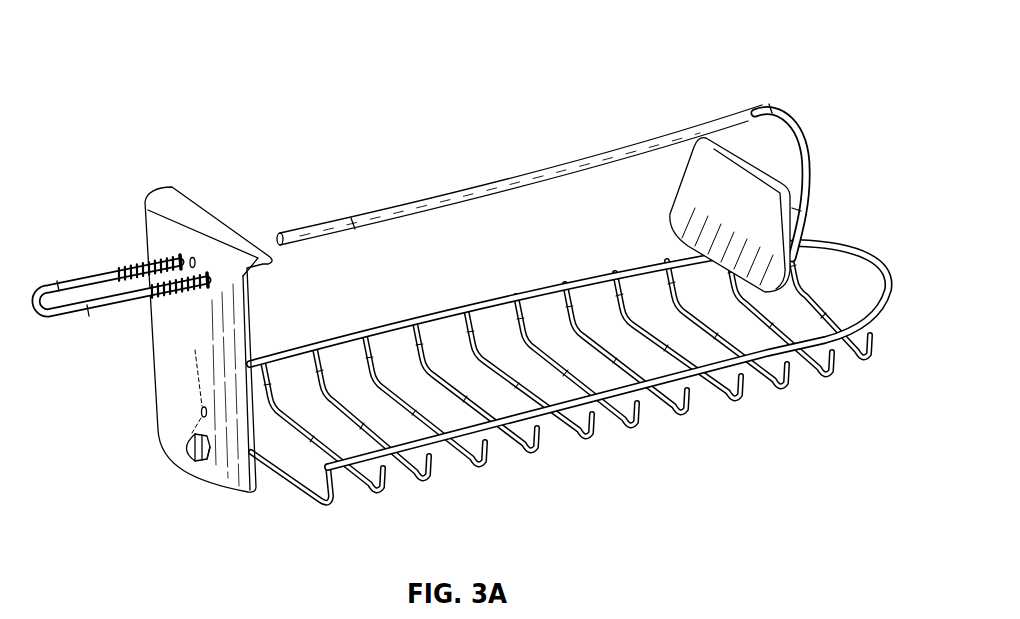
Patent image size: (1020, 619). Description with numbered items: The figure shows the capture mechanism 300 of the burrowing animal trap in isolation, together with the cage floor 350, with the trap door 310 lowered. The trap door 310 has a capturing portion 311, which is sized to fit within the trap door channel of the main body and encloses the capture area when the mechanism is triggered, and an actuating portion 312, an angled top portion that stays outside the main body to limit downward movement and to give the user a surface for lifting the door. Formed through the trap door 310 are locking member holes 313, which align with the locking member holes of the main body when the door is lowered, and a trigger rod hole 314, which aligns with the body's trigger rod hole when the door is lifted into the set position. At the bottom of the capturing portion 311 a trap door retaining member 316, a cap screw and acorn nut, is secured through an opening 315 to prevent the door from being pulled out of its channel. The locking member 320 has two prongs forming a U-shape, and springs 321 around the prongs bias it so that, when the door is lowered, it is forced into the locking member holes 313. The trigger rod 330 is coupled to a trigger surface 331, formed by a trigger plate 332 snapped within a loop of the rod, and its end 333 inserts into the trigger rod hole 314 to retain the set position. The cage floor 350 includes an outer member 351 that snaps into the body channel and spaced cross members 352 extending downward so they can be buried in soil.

The capture mechanism 300 is at (147, 46).
The trap door 310 is at (176, 316).
The capturing portion 311 is at (168, 350).
The actuating portion 312 is at (172, 188).
The locking member holes 313 is at (208, 275).
The trigger rod hole 314 is at (200, 410).
The opening 315 is at (205, 464).
The trap door retaining member 316 is at (180, 452).
The locking member 320 is at (122, 275).
The springs 321 is at (150, 262).
The trigger rod 330 is at (571, 181).
The trigger surface 331 is at (797, 132).
The trigger plate 332 is at (687, 203).
The end of trigger rod 333 is at (271, 233).
The cage floor 350 is at (593, 378).
The outer member 351 is at (823, 244).
The cross members 352 is at (865, 348).